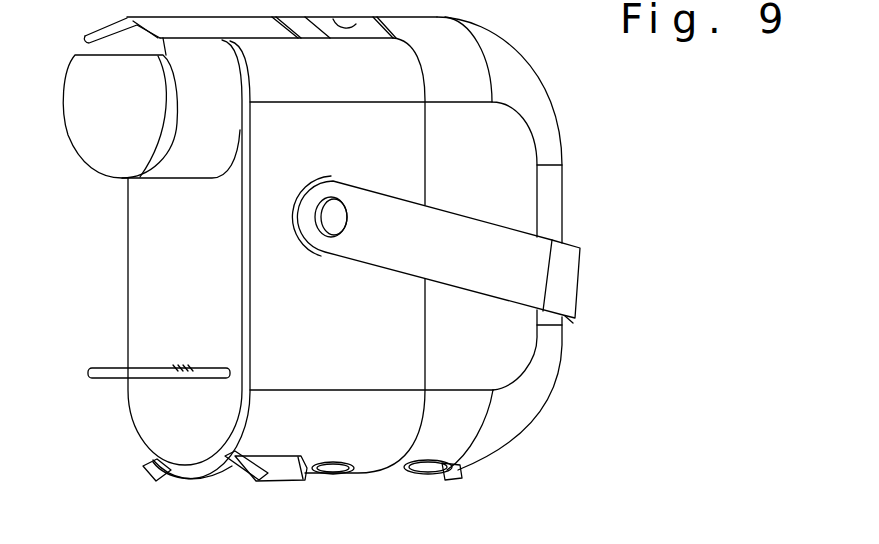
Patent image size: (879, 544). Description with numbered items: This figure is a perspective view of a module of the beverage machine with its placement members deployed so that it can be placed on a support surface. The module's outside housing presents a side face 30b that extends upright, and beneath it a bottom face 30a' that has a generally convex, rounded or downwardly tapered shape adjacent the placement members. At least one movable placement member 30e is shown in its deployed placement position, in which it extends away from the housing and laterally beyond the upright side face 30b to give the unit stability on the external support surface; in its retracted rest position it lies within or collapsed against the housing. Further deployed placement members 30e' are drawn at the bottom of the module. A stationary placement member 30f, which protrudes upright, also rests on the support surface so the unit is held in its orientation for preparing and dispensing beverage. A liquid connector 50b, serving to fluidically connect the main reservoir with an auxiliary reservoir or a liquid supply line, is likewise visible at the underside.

The side face 30b is at (260, 267).
The bottom face 30a' is at (201, 260).
The placement member 30e is at (146, 479).
The foot plate 30e' is at (222, 496).
The liquid connector 50b is at (425, 468).
The stationary placement member 30f is at (457, 473).